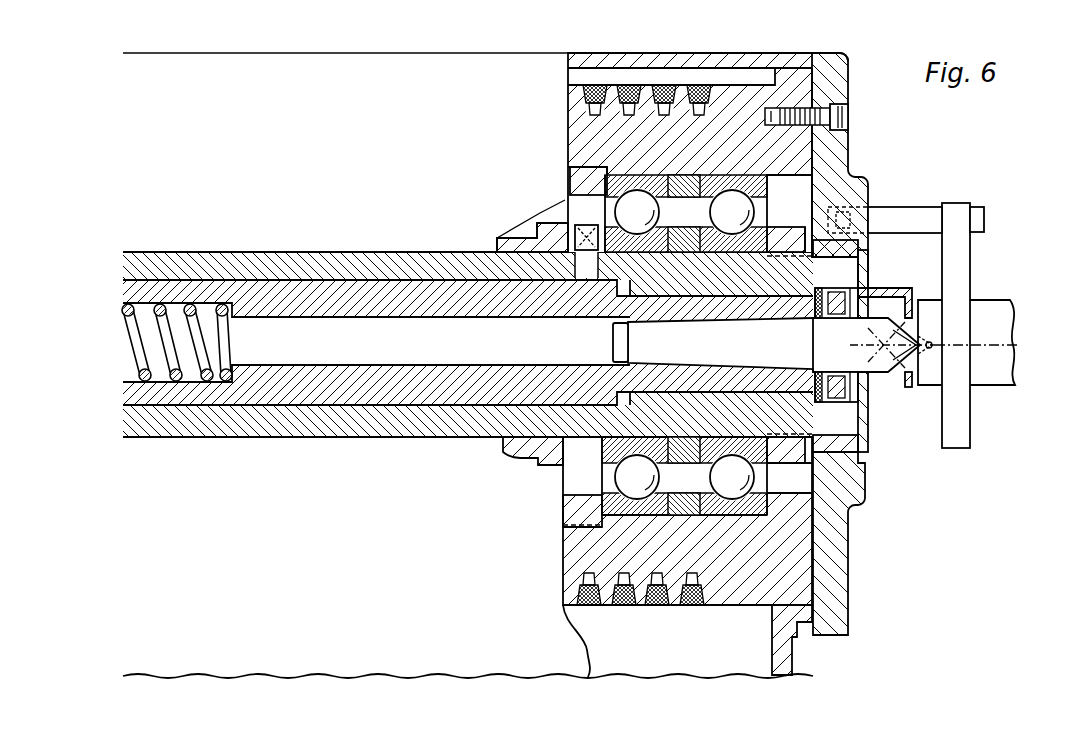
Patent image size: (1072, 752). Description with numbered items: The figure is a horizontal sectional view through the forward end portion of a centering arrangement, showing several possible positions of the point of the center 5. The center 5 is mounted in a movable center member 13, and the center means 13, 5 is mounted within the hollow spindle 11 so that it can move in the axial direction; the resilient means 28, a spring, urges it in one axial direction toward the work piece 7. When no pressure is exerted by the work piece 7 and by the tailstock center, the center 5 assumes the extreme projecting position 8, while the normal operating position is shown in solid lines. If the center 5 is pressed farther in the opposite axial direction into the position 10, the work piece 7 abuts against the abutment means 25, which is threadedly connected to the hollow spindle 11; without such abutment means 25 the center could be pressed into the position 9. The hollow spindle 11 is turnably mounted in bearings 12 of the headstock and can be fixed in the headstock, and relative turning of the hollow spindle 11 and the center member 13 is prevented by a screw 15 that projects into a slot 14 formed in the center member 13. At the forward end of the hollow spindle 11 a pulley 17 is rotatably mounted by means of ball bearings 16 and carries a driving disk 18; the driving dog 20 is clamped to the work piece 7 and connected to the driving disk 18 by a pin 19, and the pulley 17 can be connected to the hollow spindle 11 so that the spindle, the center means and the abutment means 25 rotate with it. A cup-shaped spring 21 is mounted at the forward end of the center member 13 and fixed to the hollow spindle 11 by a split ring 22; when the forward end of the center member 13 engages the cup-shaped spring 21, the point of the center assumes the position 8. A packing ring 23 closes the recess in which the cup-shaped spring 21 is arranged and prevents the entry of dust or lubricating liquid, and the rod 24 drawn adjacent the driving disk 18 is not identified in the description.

The center 5 is at (864, 327).
The work piece 7 is at (987, 308).
The extreme projecting position 8 is at (930, 357).
The position 9 is at (885, 375).
The position 10 is at (903, 374).
The hollow spindle 11 is at (420, 265).
The bearings 12 is at (502, 237).
The center member 13 is at (345, 293).
The slot 14 is at (512, 237).
The screw 15 is at (577, 268).
The ball bearings 16 is at (710, 173).
The pulley 17 is at (573, 583).
The driving disk 18 is at (862, 193).
The pin 19 is at (979, 210).
The driving dog 20 is at (962, 253).
The cup-shaped spring 21 is at (815, 313).
The split ring 22 is at (856, 279).
The packing ring 23 is at (843, 318).
The pin 24 is at (874, 226).
The abutment means 25 is at (910, 287).
The resilient means 28 is at (190, 308).